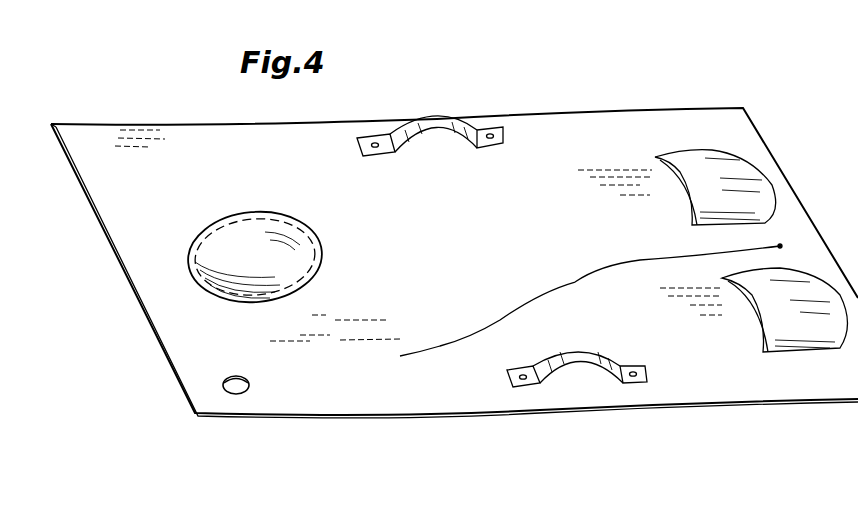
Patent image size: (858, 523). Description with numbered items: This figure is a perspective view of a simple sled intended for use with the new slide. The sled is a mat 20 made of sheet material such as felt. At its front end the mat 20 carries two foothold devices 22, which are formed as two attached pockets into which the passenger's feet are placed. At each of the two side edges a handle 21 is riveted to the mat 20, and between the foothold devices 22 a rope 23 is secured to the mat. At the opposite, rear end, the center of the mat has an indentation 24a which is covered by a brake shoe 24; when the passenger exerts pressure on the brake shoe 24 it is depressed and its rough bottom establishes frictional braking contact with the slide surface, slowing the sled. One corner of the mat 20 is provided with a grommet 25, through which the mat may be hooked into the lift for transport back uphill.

The mat 20 is at (602, 120).
The handle 21 is at (432, 122).
The foothold device 22 is at (748, 172).
The rope 23 is at (472, 361).
The brake shoe 24 is at (275, 259).
The indentation 24a is at (237, 219).
The grommet 25 is at (238, 395).